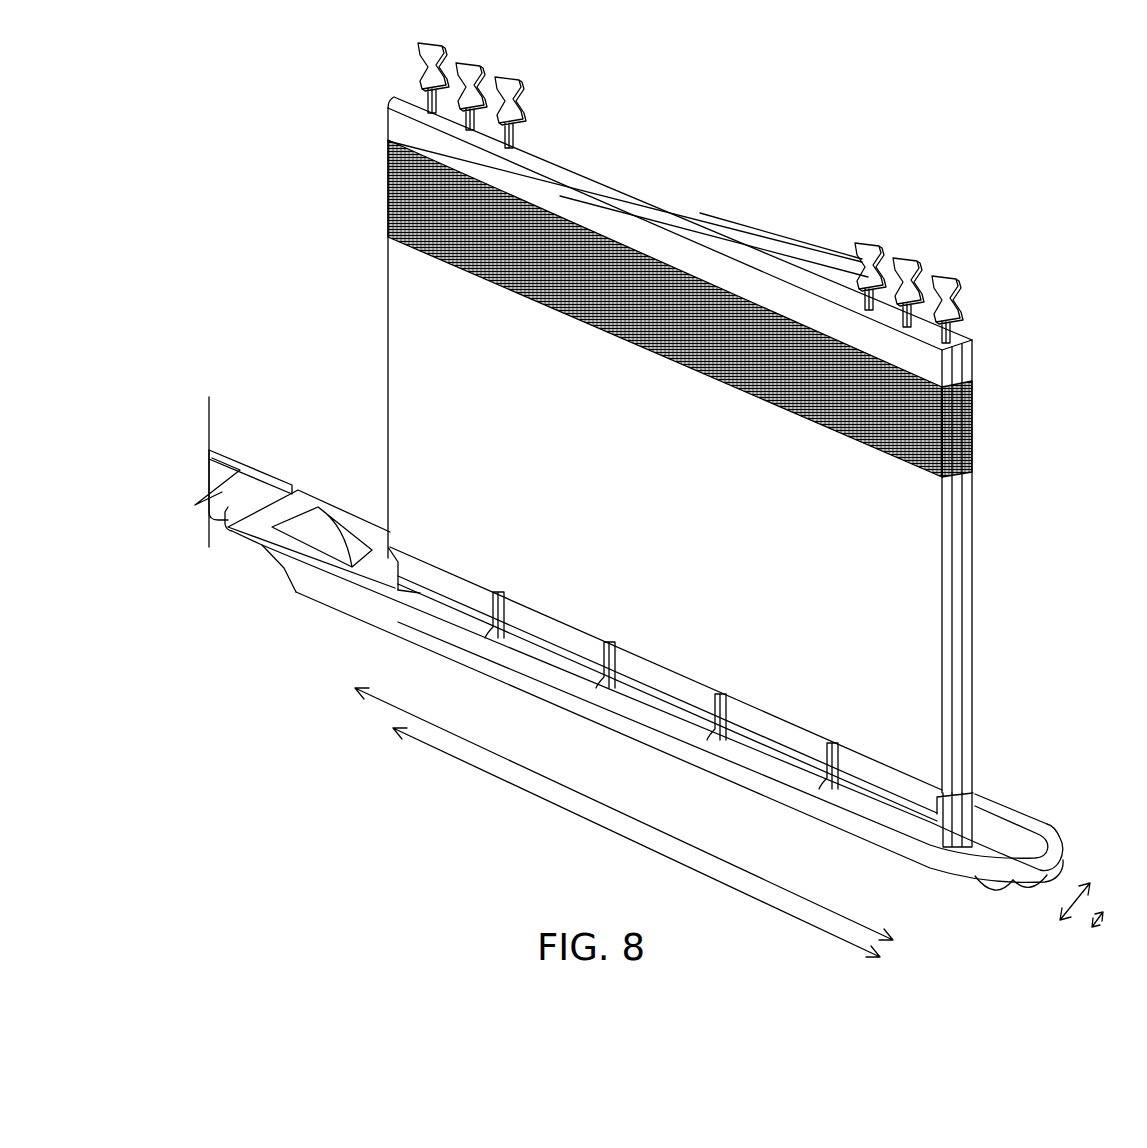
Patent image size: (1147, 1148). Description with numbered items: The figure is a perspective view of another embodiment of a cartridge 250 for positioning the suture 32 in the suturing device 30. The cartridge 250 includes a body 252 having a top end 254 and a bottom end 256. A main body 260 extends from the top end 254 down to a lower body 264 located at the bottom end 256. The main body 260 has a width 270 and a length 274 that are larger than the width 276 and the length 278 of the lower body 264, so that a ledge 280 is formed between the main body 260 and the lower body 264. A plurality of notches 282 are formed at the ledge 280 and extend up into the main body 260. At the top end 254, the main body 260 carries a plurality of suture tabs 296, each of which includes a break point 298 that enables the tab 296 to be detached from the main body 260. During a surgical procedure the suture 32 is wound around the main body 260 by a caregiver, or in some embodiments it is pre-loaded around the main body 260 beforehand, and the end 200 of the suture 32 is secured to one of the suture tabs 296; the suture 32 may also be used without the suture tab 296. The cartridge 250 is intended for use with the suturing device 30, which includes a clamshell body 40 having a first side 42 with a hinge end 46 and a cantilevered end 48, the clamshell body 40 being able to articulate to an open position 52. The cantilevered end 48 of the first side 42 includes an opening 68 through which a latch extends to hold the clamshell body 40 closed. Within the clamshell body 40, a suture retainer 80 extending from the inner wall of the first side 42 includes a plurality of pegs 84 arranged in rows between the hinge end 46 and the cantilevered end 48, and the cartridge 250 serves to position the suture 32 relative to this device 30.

The top end 254 is at (695, 118).
The cartridge 250 is at (395, 266).
The body 252 is at (395, 333).
The main body 260 is at (390, 403).
The suture 32 is at (975, 410).
The end 200 is at (797, 227).
The break point 298 is at (512, 136).
The suture tabs 296 is at (867, 246).
The bottom end 256 is at (975, 793).
The open position 52 is at (570, 731).
The first side 42 is at (432, 632).
The suturing device 30 is at (258, 480).
The clamshell body 40 is at (305, 507).
The hinge end 46 is at (316, 582).
The lower body 264 is at (404, 584).
The suture retainer 80 is at (503, 613).
The pegs 84 is at (517, 650).
The notches 282 is at (608, 660).
The ledge 280 is at (870, 793).
The cantilevered end 48 is at (973, 877).
The opening 68 is at (1028, 911).
The length 274 is at (383, 707).
The length 278 is at (463, 763).
The width 270 is at (1084, 891).
The width 276 is at (1105, 920).